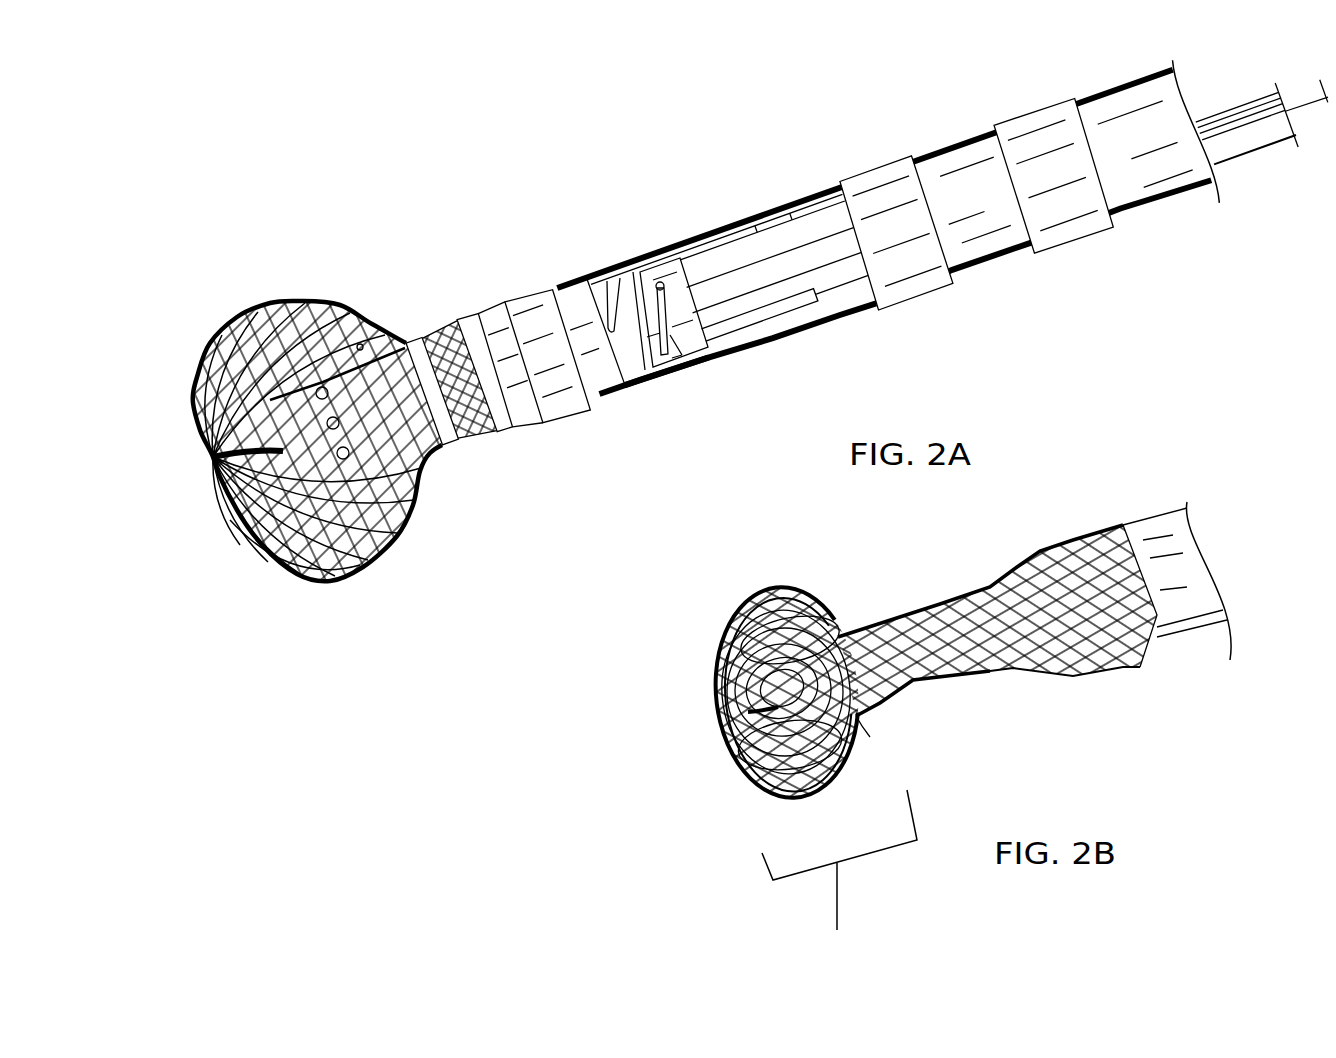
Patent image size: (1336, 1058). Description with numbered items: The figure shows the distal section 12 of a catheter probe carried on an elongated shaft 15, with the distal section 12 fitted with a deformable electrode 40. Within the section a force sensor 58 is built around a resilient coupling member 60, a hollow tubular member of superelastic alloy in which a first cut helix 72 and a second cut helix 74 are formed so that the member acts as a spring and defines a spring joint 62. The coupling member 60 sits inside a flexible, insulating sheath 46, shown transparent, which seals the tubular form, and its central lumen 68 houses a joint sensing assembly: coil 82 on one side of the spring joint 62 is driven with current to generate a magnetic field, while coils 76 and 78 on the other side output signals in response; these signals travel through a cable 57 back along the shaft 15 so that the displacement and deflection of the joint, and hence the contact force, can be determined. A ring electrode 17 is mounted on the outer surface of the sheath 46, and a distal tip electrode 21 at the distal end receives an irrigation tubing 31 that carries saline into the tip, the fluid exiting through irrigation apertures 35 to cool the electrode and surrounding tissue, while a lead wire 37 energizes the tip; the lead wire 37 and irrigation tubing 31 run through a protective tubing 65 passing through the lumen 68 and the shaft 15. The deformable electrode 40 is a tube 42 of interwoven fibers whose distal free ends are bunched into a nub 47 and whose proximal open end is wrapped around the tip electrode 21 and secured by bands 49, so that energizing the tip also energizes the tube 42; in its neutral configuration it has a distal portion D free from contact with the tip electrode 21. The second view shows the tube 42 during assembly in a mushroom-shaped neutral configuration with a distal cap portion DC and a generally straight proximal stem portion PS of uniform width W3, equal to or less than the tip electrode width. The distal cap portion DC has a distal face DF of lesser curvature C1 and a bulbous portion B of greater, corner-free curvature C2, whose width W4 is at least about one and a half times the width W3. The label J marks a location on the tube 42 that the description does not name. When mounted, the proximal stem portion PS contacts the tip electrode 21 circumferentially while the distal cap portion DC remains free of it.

In FIG. 2A, the distal section 12 is at (847, 269).
In FIG. 2A, the elongated shaft 15 is at (1155, 206).
In FIG. 2A, the ring electrode 17 is at (505, 300).
In FIG. 2A, the distal tip electrode 21 is at (310, 303).
In FIG. 2B, the distal tip electrode 21 is at (1193, 636).
In FIG. 2A, the irrigation tubing 31 is at (1255, 150).
In FIG. 2A, the irrigation apertures 35 is at (343, 583).
In FIG. 2A, the lead wire 37 is at (1308, 98).
In FIG. 2A, the deformable electrode 40 is at (287, 417).
In FIG. 2A, the hollow tube 42 is at (222, 330).
In FIG. 2A, the sheath 46 is at (818, 322).
In FIG. 2A, the nub 47 is at (212, 458).
In FIG. 2A, the bands 49 is at (457, 397).
In FIG. 2A, the cable 57 is at (1233, 107).
In FIG. 2A, the force sensor 58 is at (673, 382).
In FIG. 2A, the resilient coupling member 60 is at (580, 277).
In FIG. 2A, the spring joint 62 is at (623, 240).
In FIG. 2A, the protective tubing 65 is at (823, 227).
In FIG. 2A, the central lumen 68 is at (642, 383).
In FIG. 2A, the first cut helix 72 is at (690, 357).
In FIG. 2A, the second cut helix 74 is at (640, 277).
In FIG. 2A, the coil 76 is at (760, 236).
In FIG. 2A, the coil 78 is at (763, 321).
In FIG. 2A, the coil 82 is at (517, 390).
In FIG. 2A, the distal portion D is at (287, 414).
In FIG. 2A, the distal face DF is at (196, 419).
In FIG. 2B, the distal face DF is at (727, 737).
In FIG. 2A, the distal cap portion DC is at (285, 580).
In FIG. 2B, the distal cap portion DC is at (777, 800).
In FIG. 2A, the proximal stem portion PS is at (447, 335).
In FIG. 2B, the proximal stem portion PS is at (918, 697).
In FIG. 2B, the width W3 is at (997, 642).
In FIG. 2B, the width W4 is at (766, 696).
In FIG. 2B, the lesser curvature C1 is at (717, 693).
In FIG. 2B, the greater curvature C2 is at (813, 802).
In FIG. 2B, the junction J is at (872, 721).
In FIG. 2B, the bulbous portion B is at (839, 873).